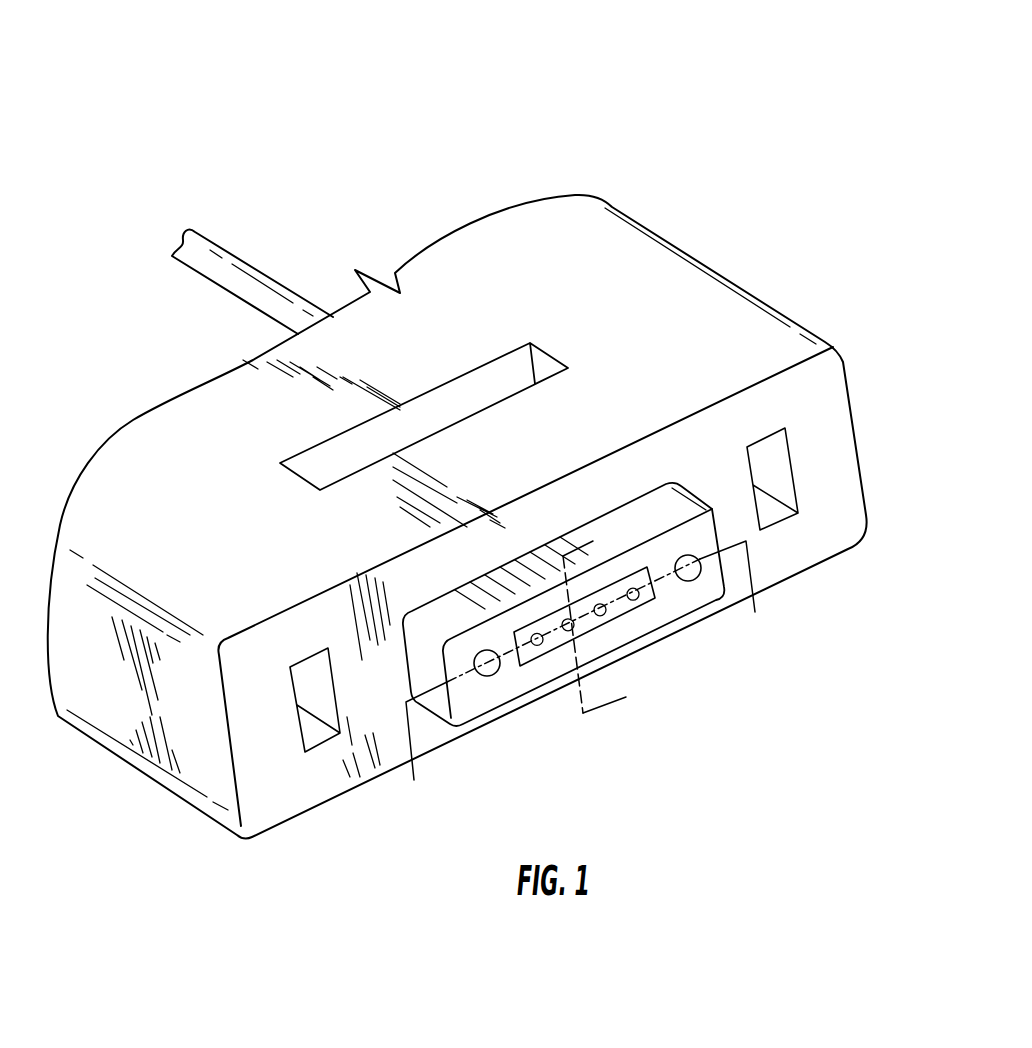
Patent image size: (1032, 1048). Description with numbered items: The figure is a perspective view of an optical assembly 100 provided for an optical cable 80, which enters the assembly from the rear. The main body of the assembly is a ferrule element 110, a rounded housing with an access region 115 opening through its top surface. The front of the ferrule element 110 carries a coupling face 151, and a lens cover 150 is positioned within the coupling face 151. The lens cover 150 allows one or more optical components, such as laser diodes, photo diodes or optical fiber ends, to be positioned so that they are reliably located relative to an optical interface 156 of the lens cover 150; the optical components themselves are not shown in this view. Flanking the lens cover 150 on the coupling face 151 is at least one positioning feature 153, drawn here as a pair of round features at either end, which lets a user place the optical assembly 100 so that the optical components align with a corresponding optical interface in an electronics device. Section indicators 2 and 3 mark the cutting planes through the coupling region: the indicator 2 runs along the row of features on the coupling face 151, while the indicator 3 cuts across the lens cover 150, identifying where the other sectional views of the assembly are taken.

The optical assembly 100 is at (884, 105).
The optical cable 80 is at (630, 122).
The ferrule element 110 is at (798, 265).
The access region 115 is at (553, 354).
The optical interface 156 is at (640, 575).
The lens cover 150 is at (630, 613).
The coupling face 151 is at (667, 623).
The positioning feature 153 is at (488, 676).
The section line 2- 2 is at (587, 687).
The section line 3- 3 is at (603, 618).